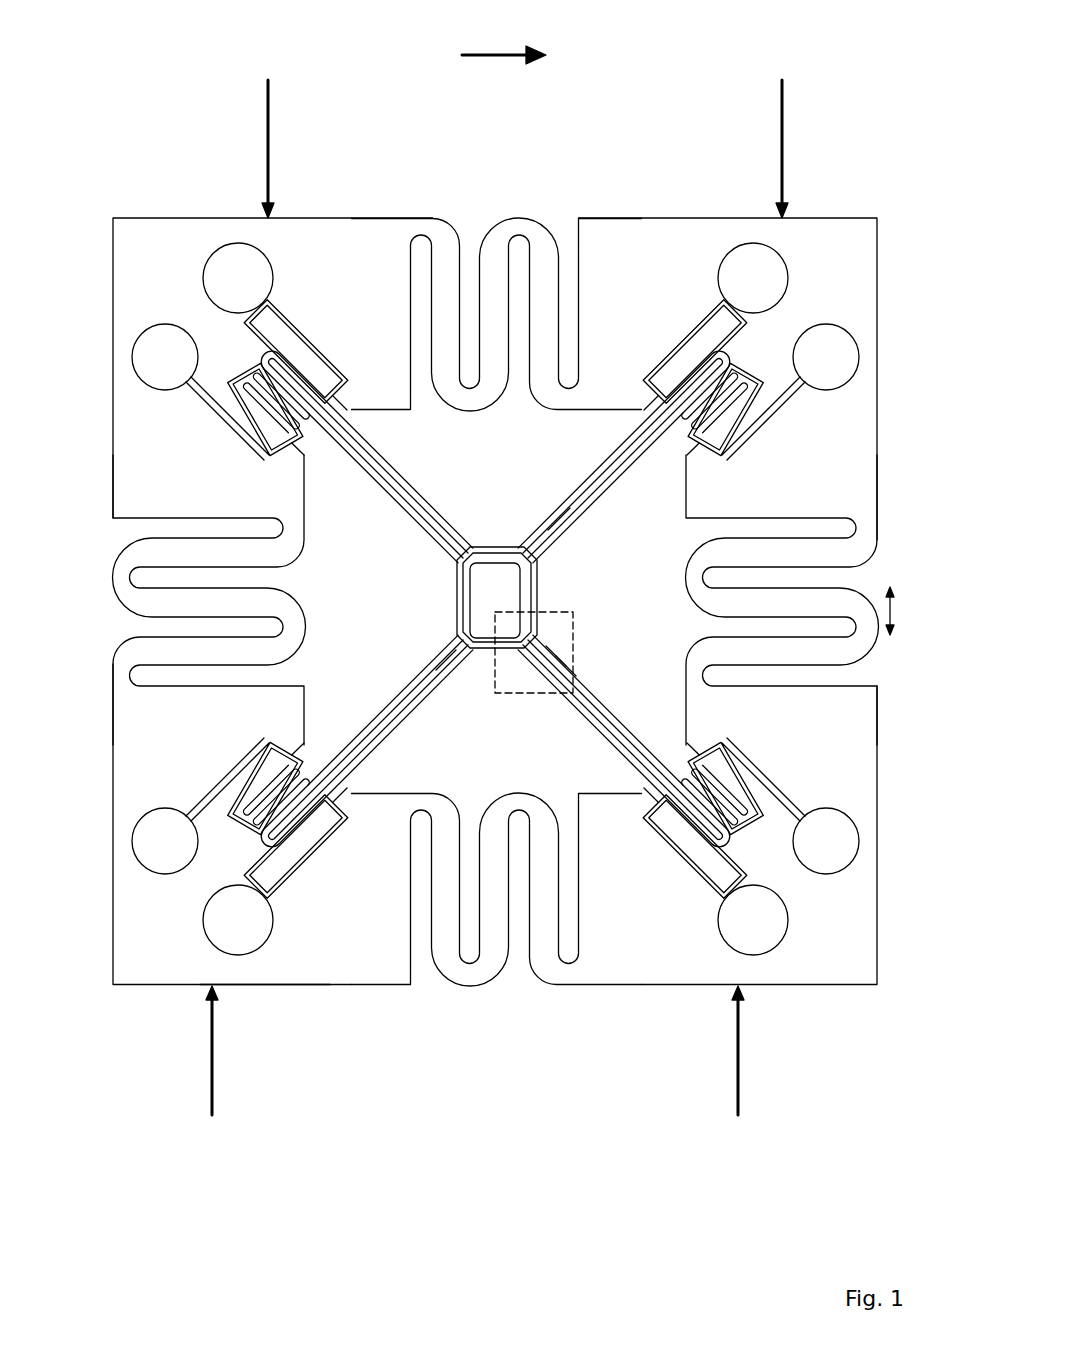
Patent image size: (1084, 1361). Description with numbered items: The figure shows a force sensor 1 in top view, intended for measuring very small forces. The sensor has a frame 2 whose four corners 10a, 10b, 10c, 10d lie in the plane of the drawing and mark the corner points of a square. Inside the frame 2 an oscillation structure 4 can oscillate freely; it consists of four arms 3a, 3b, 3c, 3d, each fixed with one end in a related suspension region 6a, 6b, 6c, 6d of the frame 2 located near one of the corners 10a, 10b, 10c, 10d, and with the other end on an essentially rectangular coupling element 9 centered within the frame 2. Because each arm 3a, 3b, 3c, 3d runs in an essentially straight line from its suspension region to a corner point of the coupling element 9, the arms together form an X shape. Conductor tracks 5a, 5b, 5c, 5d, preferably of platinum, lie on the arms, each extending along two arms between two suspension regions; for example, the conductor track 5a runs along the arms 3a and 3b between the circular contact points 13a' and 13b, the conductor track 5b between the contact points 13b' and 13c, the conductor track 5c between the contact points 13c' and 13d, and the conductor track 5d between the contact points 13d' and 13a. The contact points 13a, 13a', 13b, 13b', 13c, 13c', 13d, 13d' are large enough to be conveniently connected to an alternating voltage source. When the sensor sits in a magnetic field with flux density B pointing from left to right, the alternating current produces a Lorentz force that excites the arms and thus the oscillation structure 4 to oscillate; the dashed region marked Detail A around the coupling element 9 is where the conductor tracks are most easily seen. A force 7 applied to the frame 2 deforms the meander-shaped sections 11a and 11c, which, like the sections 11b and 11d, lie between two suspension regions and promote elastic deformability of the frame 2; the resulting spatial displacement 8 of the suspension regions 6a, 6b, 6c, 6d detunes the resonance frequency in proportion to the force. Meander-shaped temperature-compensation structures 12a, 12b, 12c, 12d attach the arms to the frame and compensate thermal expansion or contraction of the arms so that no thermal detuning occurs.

The force sensor 1 is at (188, 88).
The frame 2 is at (175, 986).
The arm 3a is at (612, 702).
The arm 3b is at (602, 482).
The arm 3c is at (400, 497).
The arm 3d is at (385, 740).
The oscillation structure 4 is at (488, 506).
The conductor track 5a is at (570, 652).
The conductor track 5b is at (558, 522).
The conductor track 5c is at (445, 658).
The conductor track 5d is at (560, 650).
The suspension region 6a is at (660, 880).
The suspension region 6b is at (680, 318).
The suspension region 6c is at (320, 330).
The suspension region 6d is at (320, 880).
The force 7 is at (274, 97).
The spatial displacement 8 is at (896, 612).
The coupling element 9 is at (455, 592).
The corner 10a is at (878, 986).
The corner 10b is at (878, 218).
The corner 10c is at (112, 217).
The corner 10d is at (112, 986).
The meander-shaped section 11a is at (880, 652).
The meander-shaped section 11b is at (515, 240).
The meander-shaped section 11c is at (116, 583).
The meander-shaped section 11d is at (483, 976).
The temperature-compensation structure 12a is at (720, 846).
The temperature-compensation structure 12b is at (720, 362).
The temperature-compensation structure 12c is at (270, 366).
The temperature-compensation structure 12d is at (270, 838).
The contact point 13a is at (753, 920).
The contact point 13a' is at (826, 841).
The contact point 13b is at (826, 357).
The contact point 13b' is at (753, 278).
The contact point 13c is at (238, 278).
The contact point 13c' is at (165, 357).
The contact point 13d is at (165, 841).
The contact point 13d' is at (238, 920).
The Detail A is at (575, 632).
The flux density B is at (485, 55).